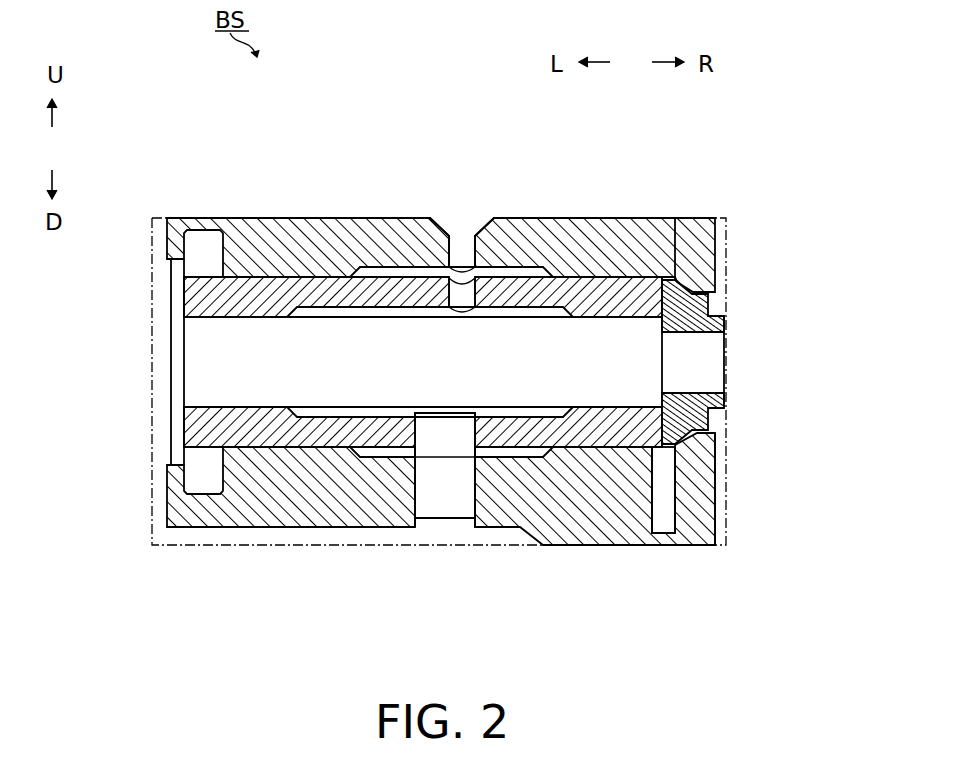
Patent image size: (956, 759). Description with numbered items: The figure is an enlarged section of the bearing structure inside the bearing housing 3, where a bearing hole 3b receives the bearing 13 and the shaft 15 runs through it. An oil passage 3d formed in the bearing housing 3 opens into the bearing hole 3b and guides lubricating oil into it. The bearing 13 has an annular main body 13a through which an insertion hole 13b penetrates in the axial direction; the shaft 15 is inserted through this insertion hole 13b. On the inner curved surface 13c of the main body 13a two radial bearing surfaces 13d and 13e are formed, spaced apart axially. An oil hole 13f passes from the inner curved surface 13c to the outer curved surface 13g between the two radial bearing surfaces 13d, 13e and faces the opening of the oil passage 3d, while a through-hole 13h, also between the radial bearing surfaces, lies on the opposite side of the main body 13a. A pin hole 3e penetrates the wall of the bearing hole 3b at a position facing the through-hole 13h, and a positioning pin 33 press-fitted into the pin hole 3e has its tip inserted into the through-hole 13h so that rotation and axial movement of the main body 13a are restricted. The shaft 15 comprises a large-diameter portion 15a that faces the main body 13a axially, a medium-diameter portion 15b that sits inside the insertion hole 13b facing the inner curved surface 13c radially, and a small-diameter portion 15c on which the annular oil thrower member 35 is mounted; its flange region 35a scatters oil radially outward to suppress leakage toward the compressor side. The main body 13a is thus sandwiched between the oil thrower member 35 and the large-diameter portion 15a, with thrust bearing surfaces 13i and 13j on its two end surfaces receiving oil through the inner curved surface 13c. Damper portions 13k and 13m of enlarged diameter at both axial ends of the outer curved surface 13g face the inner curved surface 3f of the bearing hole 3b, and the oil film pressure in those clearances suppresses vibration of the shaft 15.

The bearing housing 3 is at (598, 223).
The bearing hole 3b is at (680, 462).
The oil passage 3d is at (484, 220).
The pin hole 3e is at (422, 520).
The inner curved surface 3f is at (645, 525).
The bearing 13 is at (200, 270).
The main body 13a is at (262, 276).
The insertion hole 13b is at (512, 408).
The inner curved surface 13c is at (563, 405).
The radial bearing surface 13d is at (240, 405).
The radial bearing surface 13e is at (627, 321).
The oil hole 13f is at (472, 292).
The outer curved surface 13g is at (407, 278).
The through-hole 13h is at (470, 430).
The thrust bearing surface 13i is at (180, 296).
The thrust bearing surface 13j is at (706, 295).
The damper portion 13k is at (283, 450).
The damper portion 13m is at (648, 268).
The shaft 15 is at (439, 374).
The large-diameter portion 15a is at (183, 360).
The medium-diameter portion 15b is at (222, 397).
The small-diameter portion 15c is at (693, 372).
The positioning pin 33 is at (450, 497).
The oil thrower member 35 is at (722, 403).
The flange of end cap 35a is at (700, 391).